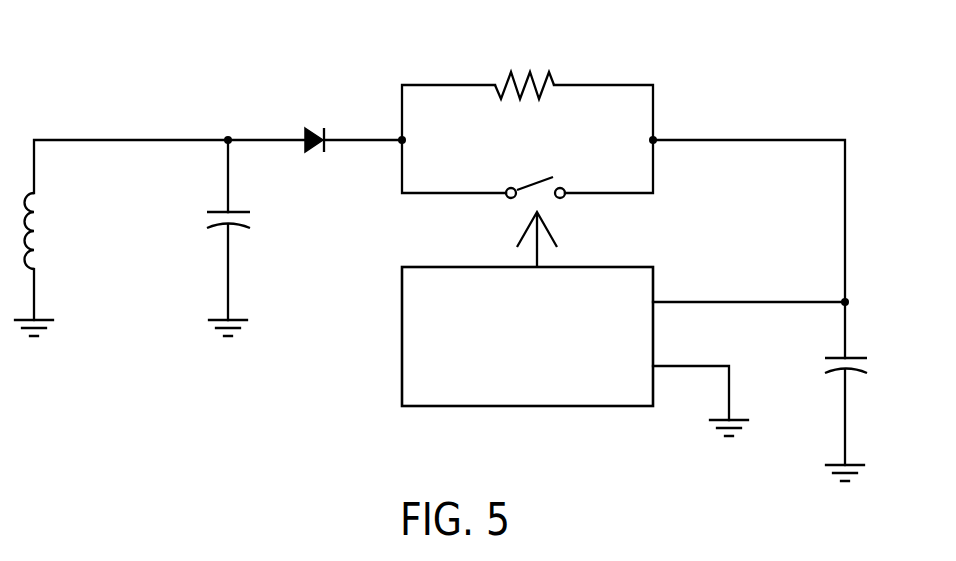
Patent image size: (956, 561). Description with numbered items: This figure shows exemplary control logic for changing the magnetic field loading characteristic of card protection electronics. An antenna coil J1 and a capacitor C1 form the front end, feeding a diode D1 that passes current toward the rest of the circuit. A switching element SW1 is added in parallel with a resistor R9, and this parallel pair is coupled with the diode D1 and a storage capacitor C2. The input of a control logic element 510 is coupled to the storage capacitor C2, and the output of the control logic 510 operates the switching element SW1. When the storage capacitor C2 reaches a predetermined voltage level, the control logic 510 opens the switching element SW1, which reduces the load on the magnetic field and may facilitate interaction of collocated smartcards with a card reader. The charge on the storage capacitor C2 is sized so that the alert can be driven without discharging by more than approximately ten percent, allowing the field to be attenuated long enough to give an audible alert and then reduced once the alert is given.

The antenna coil J1 is at (103, 231).
The capacitor C1 is at (248, 219).
The diode D1 is at (321, 121).
The resistor R9 is at (524, 71).
The switching element SW1 is at (535, 172).
The control logic element 510 is at (635, 267).
The storage capacitor C2 is at (868, 363).